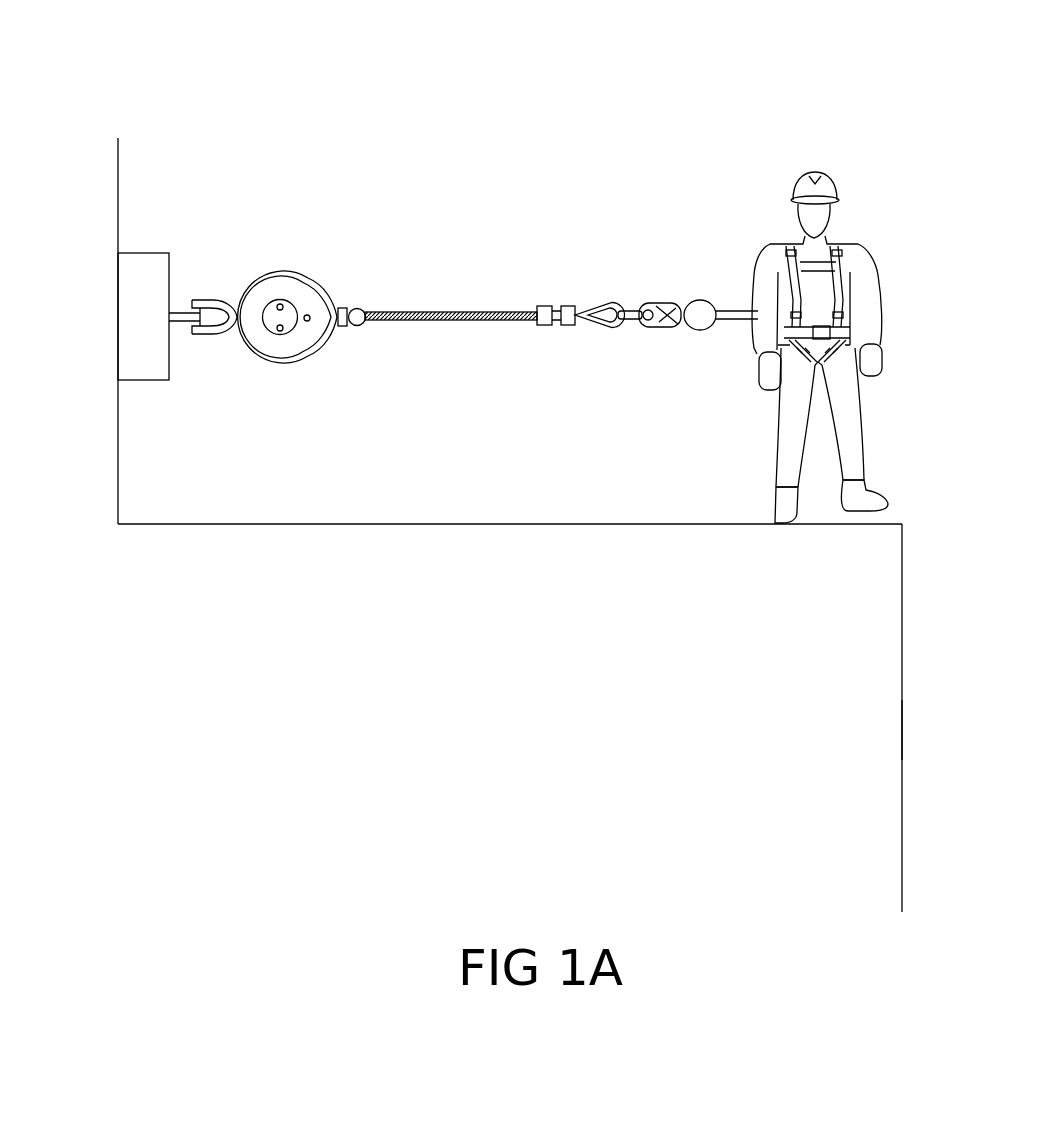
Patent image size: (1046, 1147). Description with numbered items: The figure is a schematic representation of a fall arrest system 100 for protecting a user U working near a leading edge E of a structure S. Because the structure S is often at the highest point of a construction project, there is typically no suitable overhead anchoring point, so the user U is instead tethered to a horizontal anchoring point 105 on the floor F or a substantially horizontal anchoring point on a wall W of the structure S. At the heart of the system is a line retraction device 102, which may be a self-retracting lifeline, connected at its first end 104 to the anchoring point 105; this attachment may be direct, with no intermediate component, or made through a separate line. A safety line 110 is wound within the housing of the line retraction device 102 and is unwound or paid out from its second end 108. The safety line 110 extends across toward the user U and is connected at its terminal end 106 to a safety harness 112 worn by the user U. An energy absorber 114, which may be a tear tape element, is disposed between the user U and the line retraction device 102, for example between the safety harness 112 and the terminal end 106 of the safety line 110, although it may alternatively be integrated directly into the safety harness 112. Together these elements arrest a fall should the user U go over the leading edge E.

The fall arrest system 100 is at (620, 81).
The line retraction device 102 is at (301, 272).
The first end 104 is at (233, 312).
The anchoring point 105 is at (142, 253).
The terminal end 106 is at (527, 309).
The second end 108 is at (352, 327).
The safety line 110 is at (441, 312).
The safety harness 112 is at (856, 273).
The energy absorber 114 is at (692, 300).
The user U is at (832, 197).
The wall W is at (118, 447).
The floor F is at (238, 523).
The leading edge E is at (902, 524).
The structure S is at (902, 735).